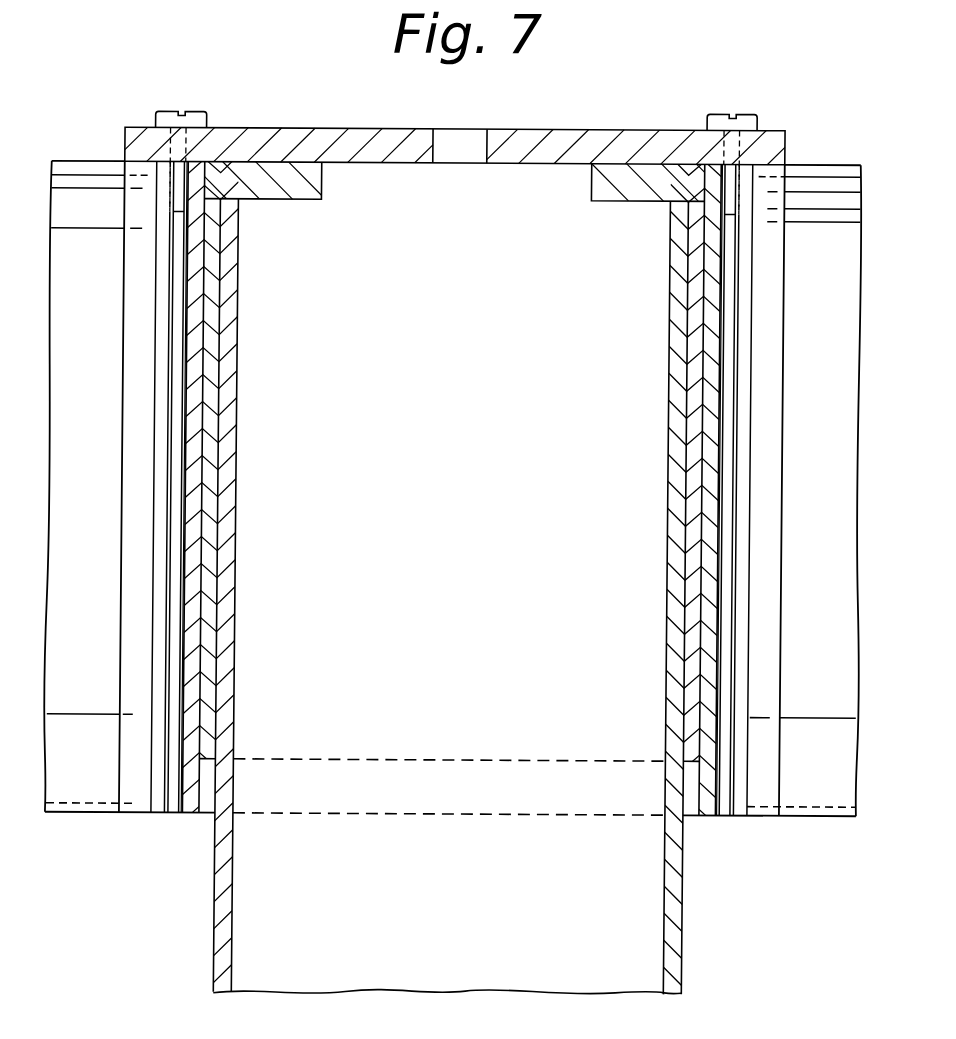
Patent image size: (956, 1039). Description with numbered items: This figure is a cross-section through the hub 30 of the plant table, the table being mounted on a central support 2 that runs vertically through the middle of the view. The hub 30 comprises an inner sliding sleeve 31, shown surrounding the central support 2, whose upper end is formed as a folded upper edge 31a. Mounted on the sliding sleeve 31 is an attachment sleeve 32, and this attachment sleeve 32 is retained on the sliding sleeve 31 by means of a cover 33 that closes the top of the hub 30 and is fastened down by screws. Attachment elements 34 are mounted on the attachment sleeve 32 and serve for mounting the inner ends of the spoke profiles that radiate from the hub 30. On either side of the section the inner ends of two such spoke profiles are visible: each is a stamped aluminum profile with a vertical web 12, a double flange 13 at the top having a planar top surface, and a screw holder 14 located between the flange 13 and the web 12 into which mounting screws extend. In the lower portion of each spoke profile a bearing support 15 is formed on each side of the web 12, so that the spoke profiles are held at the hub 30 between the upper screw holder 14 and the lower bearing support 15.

The central support 2 is at (226, 900).
The vertical web 12 is at (88, 437).
The double flange 13 is at (84, 163).
The screw holder 14 is at (839, 213).
The bearing support 15 is at (86, 785).
The hub 30 is at (451, 535).
The inner sliding sleeve 31 is at (212, 374).
The folded upper edge 31a is at (282, 189).
The attachment sleeve 32 is at (196, 484).
The cover 33 is at (324, 143).
The attachment elements 34 is at (142, 572).